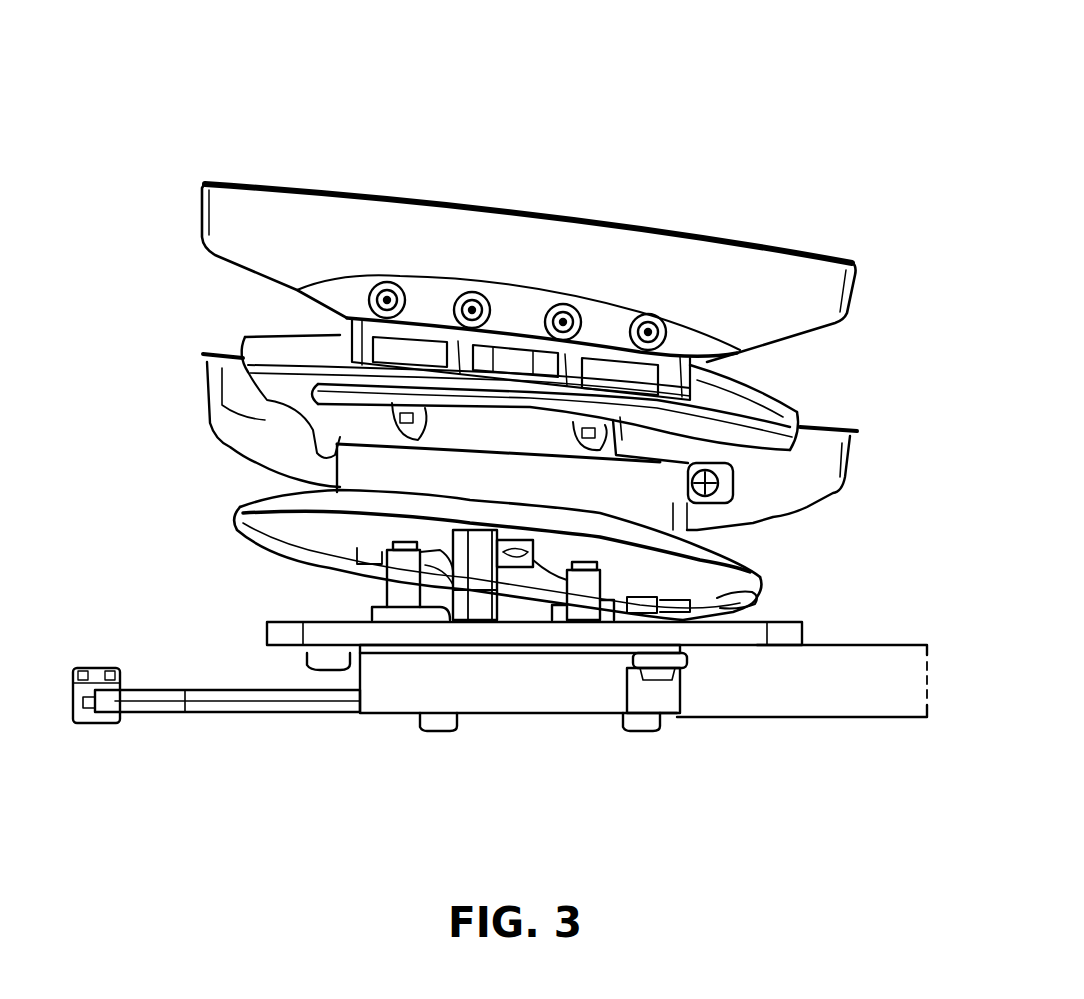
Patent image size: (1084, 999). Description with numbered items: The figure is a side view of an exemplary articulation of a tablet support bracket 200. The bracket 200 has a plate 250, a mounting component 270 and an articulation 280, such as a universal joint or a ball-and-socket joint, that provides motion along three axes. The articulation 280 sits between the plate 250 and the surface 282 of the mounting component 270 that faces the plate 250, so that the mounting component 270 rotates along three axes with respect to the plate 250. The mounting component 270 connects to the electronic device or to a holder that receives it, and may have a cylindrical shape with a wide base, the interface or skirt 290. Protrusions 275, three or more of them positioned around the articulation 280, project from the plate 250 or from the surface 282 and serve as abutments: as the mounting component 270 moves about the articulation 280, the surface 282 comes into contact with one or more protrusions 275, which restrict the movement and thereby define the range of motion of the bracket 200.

The bracket 200 is at (648, 81).
The skirt 290 is at (367, 232).
The plate 250 is at (357, 482).
The surface of the mounting component 282 is at (718, 597).
The mounting component 270 is at (730, 636).
The protrusions 275 is at (398, 596).
The articulation 280 is at (483, 594).